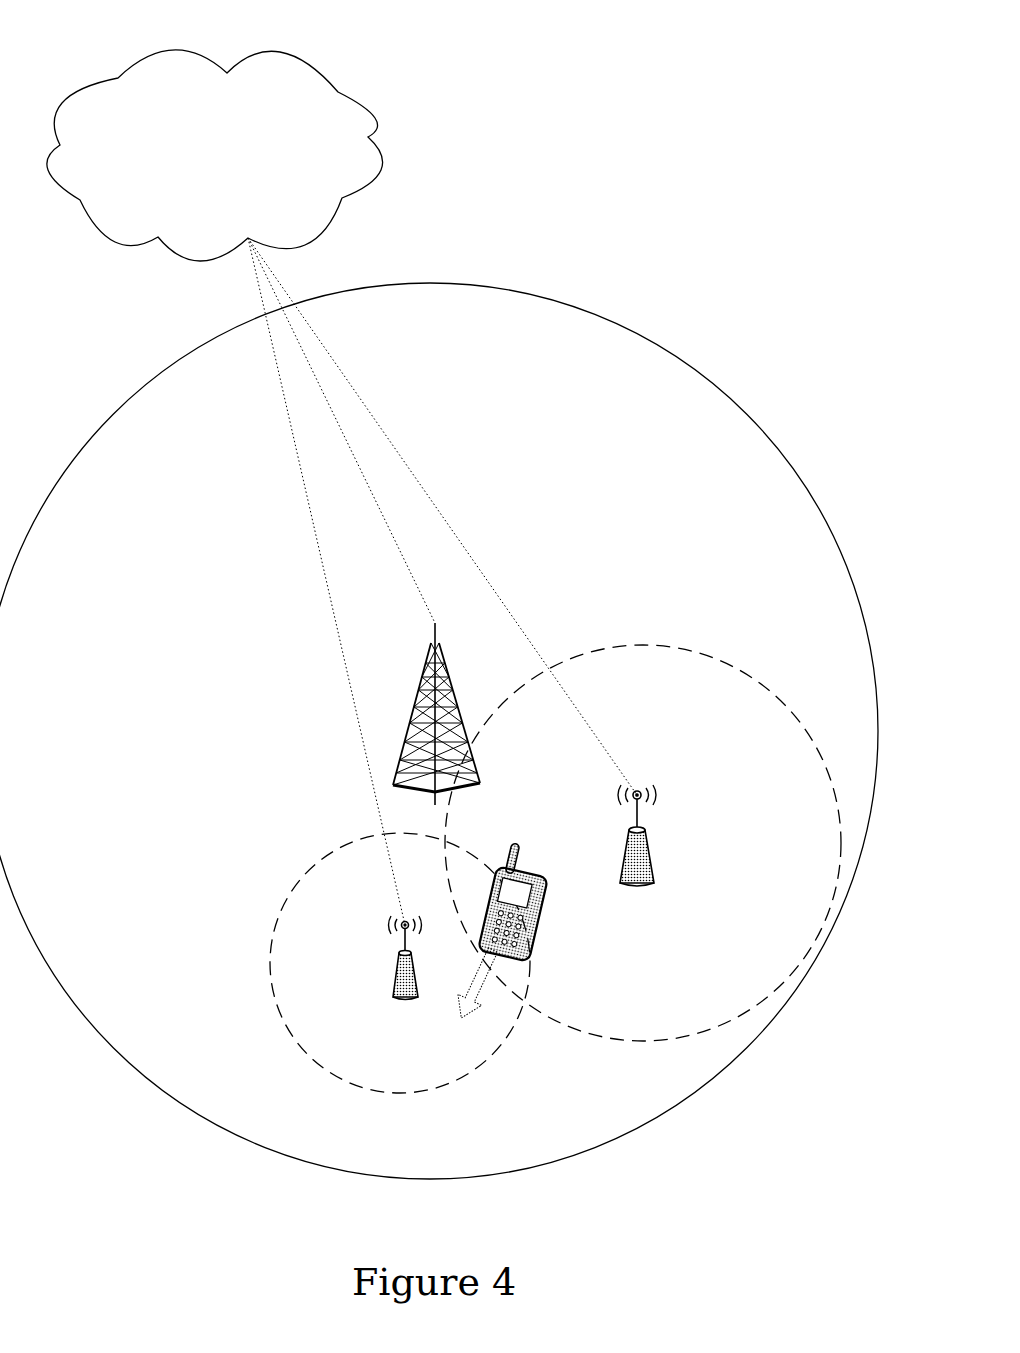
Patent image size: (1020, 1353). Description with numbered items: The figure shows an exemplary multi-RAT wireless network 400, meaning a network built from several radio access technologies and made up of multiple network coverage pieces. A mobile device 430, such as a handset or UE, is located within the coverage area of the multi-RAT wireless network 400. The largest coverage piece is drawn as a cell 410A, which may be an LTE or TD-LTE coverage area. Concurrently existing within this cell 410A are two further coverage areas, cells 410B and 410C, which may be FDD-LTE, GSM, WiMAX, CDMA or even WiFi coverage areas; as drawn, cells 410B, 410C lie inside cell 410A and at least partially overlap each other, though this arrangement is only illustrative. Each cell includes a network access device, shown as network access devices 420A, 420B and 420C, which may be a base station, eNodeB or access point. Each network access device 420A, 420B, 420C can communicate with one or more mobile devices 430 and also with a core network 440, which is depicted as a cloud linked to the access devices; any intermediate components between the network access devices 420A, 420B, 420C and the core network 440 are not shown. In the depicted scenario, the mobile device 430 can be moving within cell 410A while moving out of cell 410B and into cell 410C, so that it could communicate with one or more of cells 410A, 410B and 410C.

The multi-RAT wireless network 400 is at (776, 88).
The cell 410A is at (450, 329).
The cell 410B is at (667, 683).
The cell 410C is at (427, 1082).
The network access device 420A is at (447, 692).
The network access device 420B is at (647, 828).
The network access device 420C is at (398, 965).
The mobile device 430 is at (537, 957).
The core network 440 is at (229, 167).